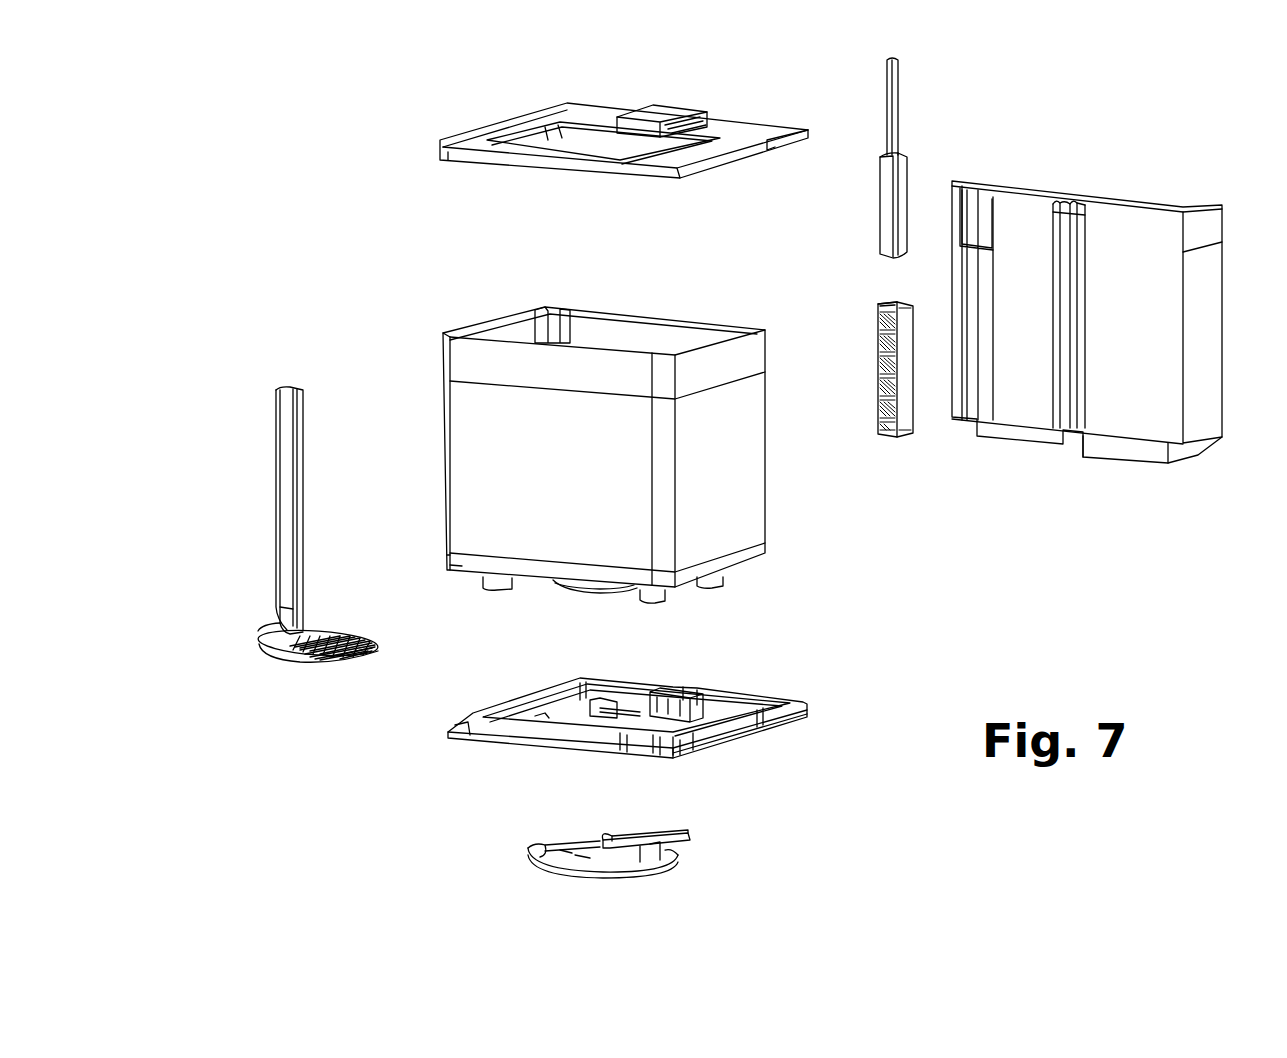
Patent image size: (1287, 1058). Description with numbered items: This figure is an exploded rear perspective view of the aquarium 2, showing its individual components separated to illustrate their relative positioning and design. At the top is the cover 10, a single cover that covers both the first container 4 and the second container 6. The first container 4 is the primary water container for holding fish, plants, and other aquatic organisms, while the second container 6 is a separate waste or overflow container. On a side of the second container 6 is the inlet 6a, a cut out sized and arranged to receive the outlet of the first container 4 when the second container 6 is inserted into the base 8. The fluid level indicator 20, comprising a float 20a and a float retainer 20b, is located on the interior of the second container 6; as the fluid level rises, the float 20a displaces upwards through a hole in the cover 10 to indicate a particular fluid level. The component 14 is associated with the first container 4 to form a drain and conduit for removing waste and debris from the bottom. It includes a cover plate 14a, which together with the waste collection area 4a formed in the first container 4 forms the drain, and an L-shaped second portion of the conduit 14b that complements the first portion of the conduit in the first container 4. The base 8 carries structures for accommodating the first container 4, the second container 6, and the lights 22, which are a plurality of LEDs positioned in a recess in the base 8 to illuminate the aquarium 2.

The aquarium 2 is at (229, 119).
The cover 10 is at (683, 110).
The fluid level indicator 20 is at (868, 230).
The float 20a is at (900, 152).
The float retainer 20b is at (880, 330).
The second container 6 is at (1212, 370).
The inlet 6a is at (975, 245).
The first container 4 is at (732, 462).
The waste collection area 4a is at (567, 592).
The component 14 is at (273, 470).
The second portion of the conduit 14b is at (275, 628).
The cover plate 14a is at (297, 660).
The base 8 is at (802, 698).
The lights 22 is at (692, 835).